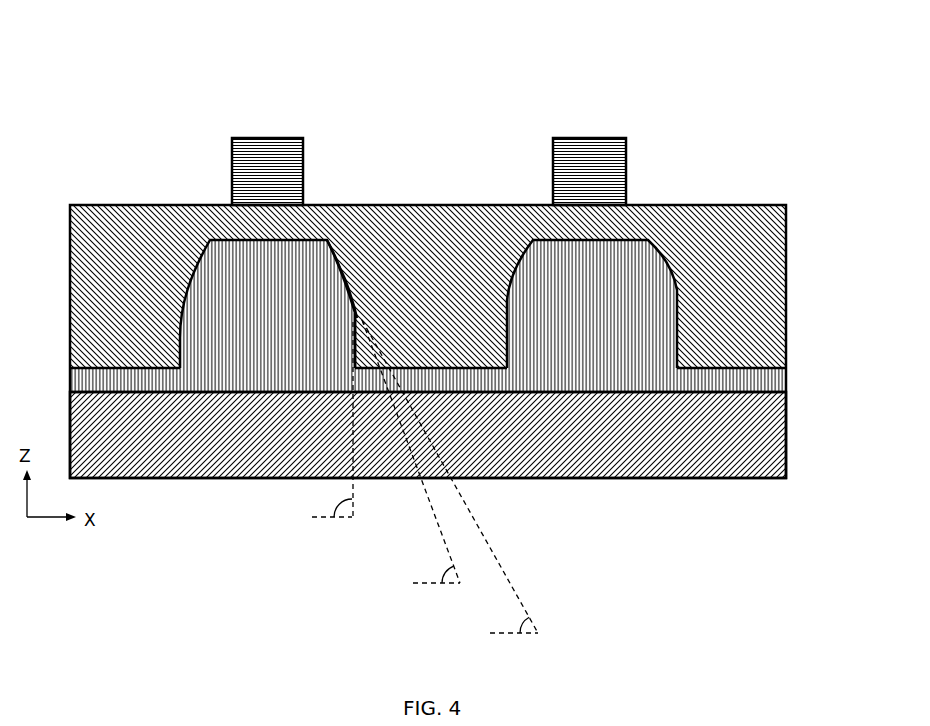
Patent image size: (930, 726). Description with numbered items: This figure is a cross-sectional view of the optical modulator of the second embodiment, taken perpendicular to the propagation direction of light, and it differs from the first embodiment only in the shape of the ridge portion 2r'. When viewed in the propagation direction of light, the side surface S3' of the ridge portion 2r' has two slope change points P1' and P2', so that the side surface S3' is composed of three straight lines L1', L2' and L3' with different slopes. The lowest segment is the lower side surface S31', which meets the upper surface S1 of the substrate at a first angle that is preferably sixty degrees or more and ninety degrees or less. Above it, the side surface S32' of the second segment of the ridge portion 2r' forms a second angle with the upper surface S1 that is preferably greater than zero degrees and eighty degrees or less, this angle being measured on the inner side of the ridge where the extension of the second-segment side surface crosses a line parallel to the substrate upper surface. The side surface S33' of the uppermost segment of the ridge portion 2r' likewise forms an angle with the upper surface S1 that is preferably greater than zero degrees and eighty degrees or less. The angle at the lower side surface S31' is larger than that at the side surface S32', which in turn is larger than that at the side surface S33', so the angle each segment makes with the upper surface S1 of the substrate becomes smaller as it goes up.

The ridge portion 2r' is at (426, 257).
The third straight line L3' is at (375, 143).
The side surface of the uppermost segment S33' is at (375, 143).
The side surface S3' is at (380, 184).
The slope change point P2' is at (407, 200).
The second straight line L2' is at (435, 229).
The side surface of the second segment S32' is at (435, 229).
The slope change point P1' is at (432, 248).
The first straight line L1' is at (260, 427).
The lower side surface S31' is at (260, 427).
The upper surface of substrate S1 is at (730, 368).